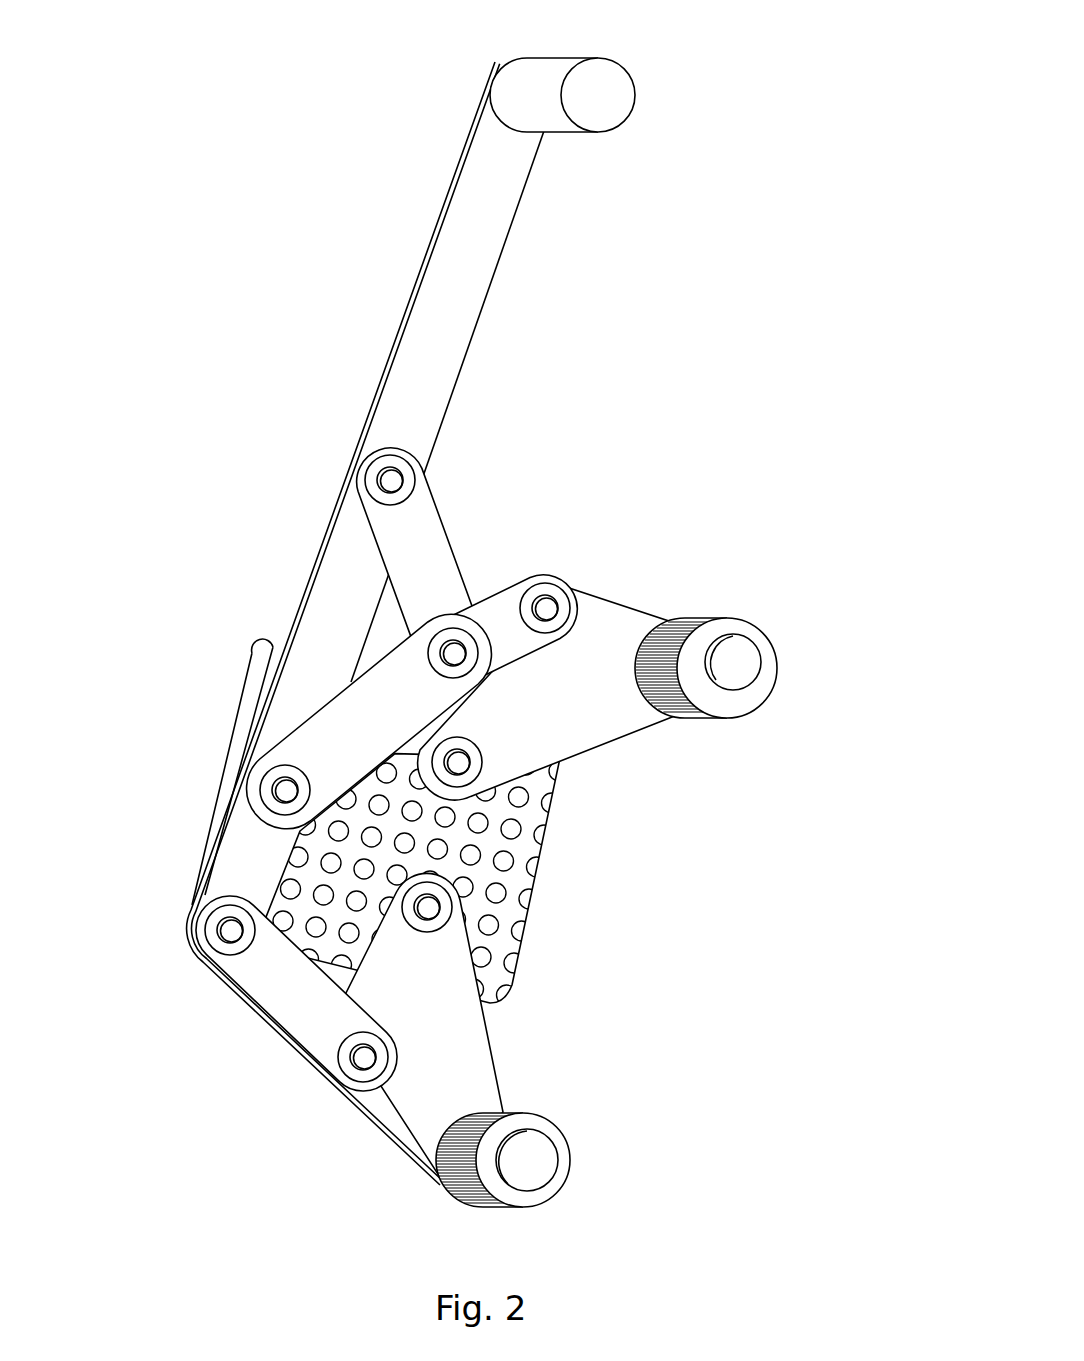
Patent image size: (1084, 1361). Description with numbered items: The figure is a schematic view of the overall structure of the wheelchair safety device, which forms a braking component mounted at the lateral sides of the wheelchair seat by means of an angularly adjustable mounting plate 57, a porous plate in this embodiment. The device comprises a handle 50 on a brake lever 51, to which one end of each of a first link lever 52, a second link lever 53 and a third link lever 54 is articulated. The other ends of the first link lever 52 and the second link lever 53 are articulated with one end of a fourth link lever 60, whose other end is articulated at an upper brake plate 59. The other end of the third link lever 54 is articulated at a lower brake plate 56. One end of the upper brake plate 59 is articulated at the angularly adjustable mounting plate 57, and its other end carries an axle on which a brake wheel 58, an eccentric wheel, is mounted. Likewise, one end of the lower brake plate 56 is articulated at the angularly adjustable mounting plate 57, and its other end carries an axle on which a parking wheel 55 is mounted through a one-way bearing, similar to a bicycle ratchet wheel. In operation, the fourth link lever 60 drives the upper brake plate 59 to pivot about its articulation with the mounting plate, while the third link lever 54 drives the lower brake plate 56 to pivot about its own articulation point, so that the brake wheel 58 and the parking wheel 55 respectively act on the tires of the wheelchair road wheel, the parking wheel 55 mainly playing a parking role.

The handle 50 is at (545, 72).
The brake lever 51 is at (452, 254).
The first link lever 52 is at (400, 533).
The second link lever 53 is at (338, 734).
The third link lever 54 is at (284, 994).
The parking wheel 55 is at (527, 1198).
The lower brake plate 56 is at (455, 1026).
The angularly adjustable mounting plate 57 is at (520, 882).
The brake wheel 58 is at (745, 692).
The upper brake plate 59 is at (618, 640).
The fourth link lever 60 is at (495, 620).